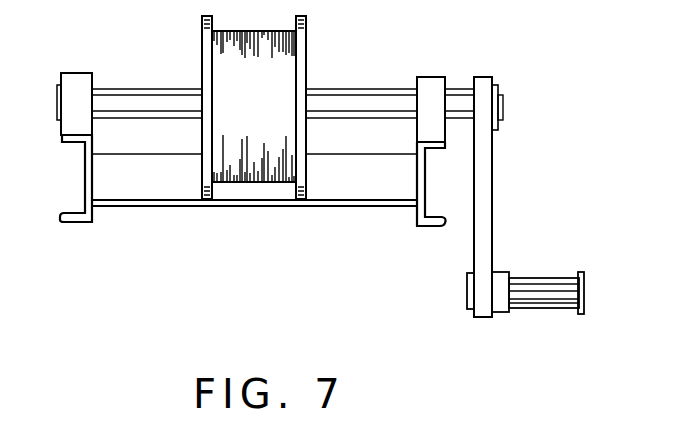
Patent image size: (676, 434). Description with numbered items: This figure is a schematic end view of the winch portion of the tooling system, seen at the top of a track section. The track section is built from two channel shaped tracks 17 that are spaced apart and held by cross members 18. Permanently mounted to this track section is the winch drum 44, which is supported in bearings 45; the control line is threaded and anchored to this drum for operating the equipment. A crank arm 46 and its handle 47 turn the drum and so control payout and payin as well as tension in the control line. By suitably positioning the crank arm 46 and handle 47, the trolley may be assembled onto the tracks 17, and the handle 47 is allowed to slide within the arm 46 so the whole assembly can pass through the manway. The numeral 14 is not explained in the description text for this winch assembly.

The winch assembly 14 is at (321, 58).
The channel shaped tracks 17 is at (63, 218).
The cross members 18 is at (187, 203).
The winch drum 44 is at (202, 31).
The bearings 45 is at (437, 77).
The crank arm 46 is at (491, 203).
The handle 47 is at (536, 275).